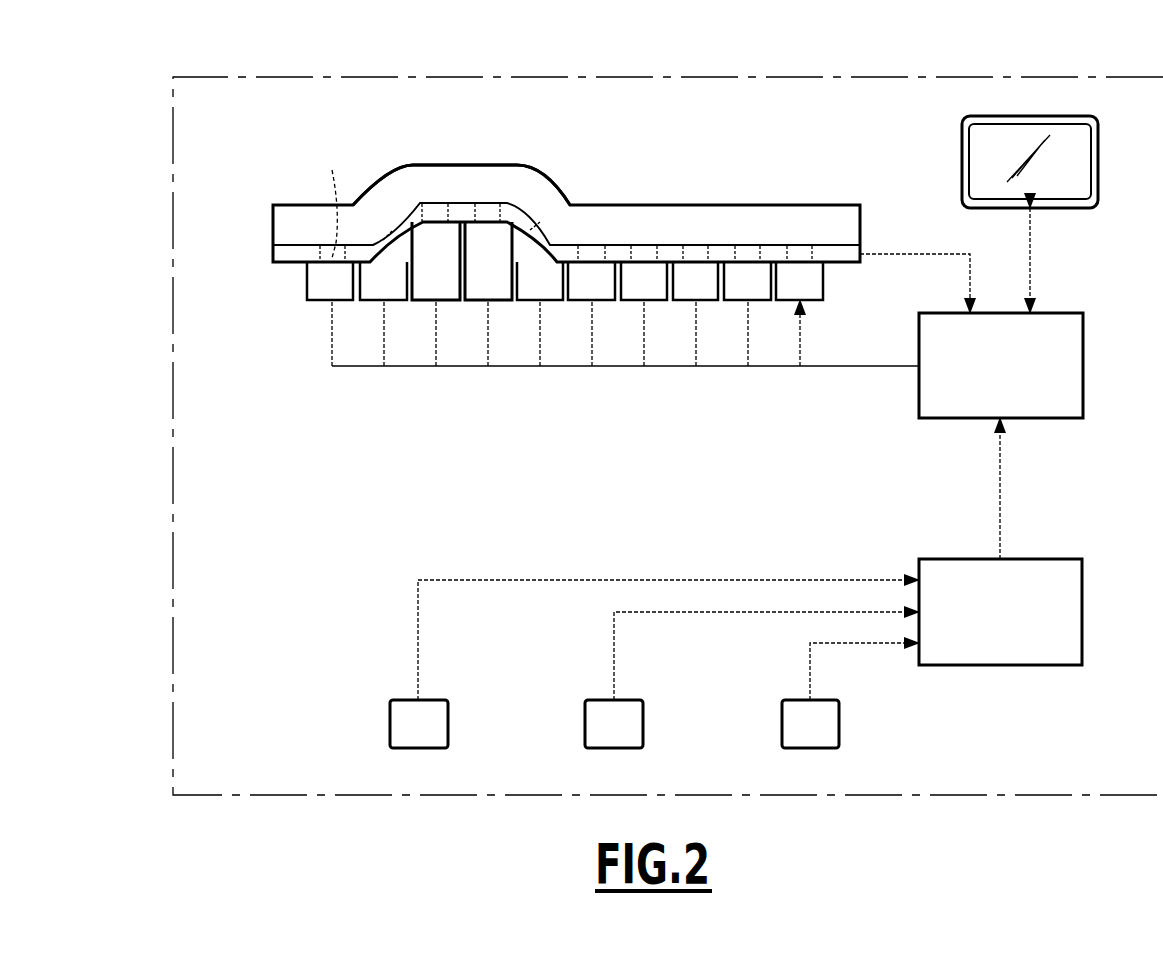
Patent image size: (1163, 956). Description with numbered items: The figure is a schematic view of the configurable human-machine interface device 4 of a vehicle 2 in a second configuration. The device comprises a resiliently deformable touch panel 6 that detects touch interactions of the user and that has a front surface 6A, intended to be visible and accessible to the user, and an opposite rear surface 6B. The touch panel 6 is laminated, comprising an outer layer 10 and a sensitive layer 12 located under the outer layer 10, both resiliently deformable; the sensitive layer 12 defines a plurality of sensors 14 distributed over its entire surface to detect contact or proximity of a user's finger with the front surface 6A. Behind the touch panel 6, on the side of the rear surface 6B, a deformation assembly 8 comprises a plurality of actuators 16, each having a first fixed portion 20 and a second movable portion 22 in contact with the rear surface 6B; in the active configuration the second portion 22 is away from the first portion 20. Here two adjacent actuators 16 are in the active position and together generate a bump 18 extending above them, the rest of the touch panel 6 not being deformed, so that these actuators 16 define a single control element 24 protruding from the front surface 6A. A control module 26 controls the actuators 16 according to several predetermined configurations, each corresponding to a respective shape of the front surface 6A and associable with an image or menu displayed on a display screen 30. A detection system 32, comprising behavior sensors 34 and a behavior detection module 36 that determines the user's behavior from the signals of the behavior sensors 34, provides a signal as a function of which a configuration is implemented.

The vehicle 2 is at (962, 77).
The configurable human-machine interface device 4 is at (529, 255).
The touch panel 6 is at (529, 204).
The front surface 6A is at (290, 205).
The rear surface 6B is at (290, 263).
The deformation assembly 8 is at (553, 380).
The outer layer 10 is at (273, 225).
The sensitive layer 12 is at (273, 254).
The sensors 14 is at (333, 193).
The actuators 16 is at (437, 247).
The bump 18 is at (555, 190).
The first fixed portion 20 is at (462, 300).
The second movable portion 22 is at (513, 222).
The control element 24 is at (428, 162).
The control module 26 is at (1013, 388).
The display screen 30 is at (1091, 162).
The detection system 32 is at (736, 583).
The behavior sensors 34 is at (432, 740).
The behavior detection module 36 is at (1013, 633).